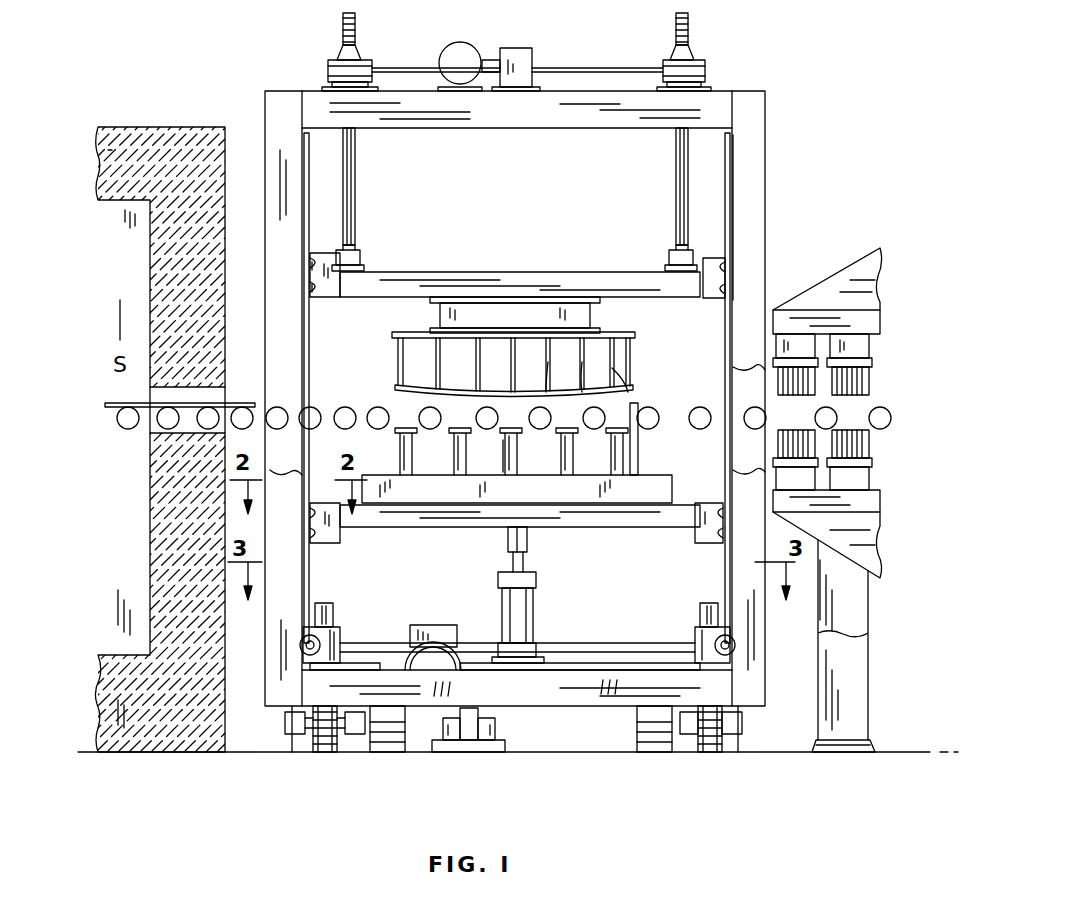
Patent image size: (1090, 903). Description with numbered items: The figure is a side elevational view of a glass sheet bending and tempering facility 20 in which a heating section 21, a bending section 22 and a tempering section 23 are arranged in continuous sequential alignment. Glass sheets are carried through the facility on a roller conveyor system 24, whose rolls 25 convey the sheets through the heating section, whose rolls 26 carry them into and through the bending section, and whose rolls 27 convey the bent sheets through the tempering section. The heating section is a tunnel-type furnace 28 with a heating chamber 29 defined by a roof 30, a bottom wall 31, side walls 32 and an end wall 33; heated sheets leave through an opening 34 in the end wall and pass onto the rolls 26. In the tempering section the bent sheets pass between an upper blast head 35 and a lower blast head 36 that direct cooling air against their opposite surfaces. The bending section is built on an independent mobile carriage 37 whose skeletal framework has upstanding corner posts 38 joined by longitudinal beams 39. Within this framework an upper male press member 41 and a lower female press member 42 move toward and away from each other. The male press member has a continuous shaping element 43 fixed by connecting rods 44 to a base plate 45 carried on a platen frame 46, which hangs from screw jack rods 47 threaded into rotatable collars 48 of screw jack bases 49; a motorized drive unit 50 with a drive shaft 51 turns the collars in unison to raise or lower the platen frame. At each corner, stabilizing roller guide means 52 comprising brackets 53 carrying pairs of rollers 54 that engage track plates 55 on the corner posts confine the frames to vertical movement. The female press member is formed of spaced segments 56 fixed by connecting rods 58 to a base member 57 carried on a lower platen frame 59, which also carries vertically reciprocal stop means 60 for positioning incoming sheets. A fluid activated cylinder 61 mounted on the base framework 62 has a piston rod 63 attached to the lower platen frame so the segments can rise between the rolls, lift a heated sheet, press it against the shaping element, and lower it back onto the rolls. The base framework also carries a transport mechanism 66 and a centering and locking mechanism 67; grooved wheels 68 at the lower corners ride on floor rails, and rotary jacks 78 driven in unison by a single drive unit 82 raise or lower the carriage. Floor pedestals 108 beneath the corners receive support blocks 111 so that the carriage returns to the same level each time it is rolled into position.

The glass sheet bending and tempering facility 20 is at (594, 411).
The heating section 21 is at (421, 393).
The bending section 22 is at (525, 378).
The tempering section 23 is at (853, 452).
The roller conveyor system 24 is at (882, 422).
The rolls 25 is at (163, 430).
The rolls 26 is at (380, 408).
The rolls 27 is at (882, 408).
The tunnel-type furnace 28 is at (178, 125).
The heating chamber 29 is at (108, 330).
The roof 30 is at (107, 160).
The bottom wall 31 is at (107, 686).
The side walls 32 is at (138, 568).
The end wall 33 is at (153, 287).
The opening 34 is at (240, 400).
The upper blast head 35 is at (830, 290).
The lower blast head 36 is at (880, 540).
The mobile carriage 37 is at (768, 157).
The corner posts 38 is at (276, 222).
The longitudinal beams 39 is at (556, 128).
The upper male press member 41 is at (390, 358).
The lower female press member 42 is at (518, 464).
The shaping element 43 is at (628, 392).
The connecting rods 44 is at (582, 365).
The base plate 45 is at (610, 340).
The platen frame 46 is at (414, 270).
The screw jack rods 47 is at (356, 190).
The rotatable collars 48 is at (330, 62).
The screw jack bases 49 is at (368, 50).
The motorized drive unit 50 is at (527, 58).
The drive shaft 51 is at (398, 70).
The stabilizing roller guide means 52 is at (327, 303).
The brackets 53 is at (318, 255).
The rollers 54 is at (308, 288).
The track plate 55 is at (308, 150).
The segments 56 is at (452, 430).
The base member 57 is at (672, 494).
The connecting rods 58 is at (495, 456).
The lower platen frame 59 is at (604, 538).
The stop means 60 is at (640, 412).
The fluid activated cylinder 61 is at (536, 608).
The base framework 62 is at (598, 708).
The piston rod 63 is at (525, 560).
The transport mechanism 66 is at (306, 760).
The centering and locking mechanism 67 is at (520, 742).
The grooved wheel 68 is at (337, 756).
The rotary jack 78 is at (340, 638).
The drive unit 82 is at (430, 622).
The pedestal 108 is at (386, 744).
The support blocks 111 is at (434, 698).